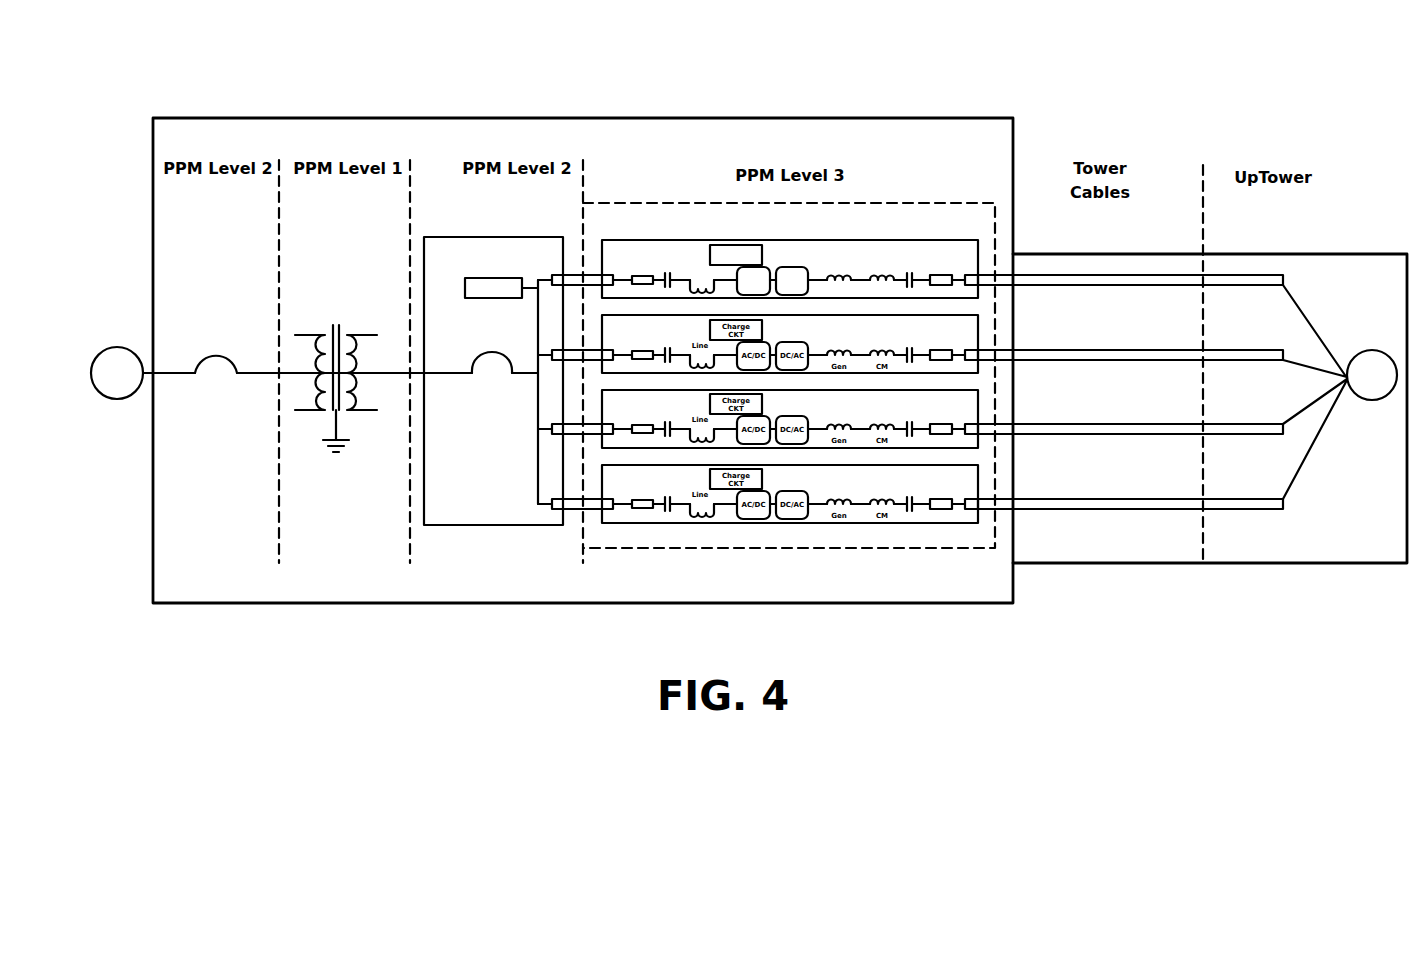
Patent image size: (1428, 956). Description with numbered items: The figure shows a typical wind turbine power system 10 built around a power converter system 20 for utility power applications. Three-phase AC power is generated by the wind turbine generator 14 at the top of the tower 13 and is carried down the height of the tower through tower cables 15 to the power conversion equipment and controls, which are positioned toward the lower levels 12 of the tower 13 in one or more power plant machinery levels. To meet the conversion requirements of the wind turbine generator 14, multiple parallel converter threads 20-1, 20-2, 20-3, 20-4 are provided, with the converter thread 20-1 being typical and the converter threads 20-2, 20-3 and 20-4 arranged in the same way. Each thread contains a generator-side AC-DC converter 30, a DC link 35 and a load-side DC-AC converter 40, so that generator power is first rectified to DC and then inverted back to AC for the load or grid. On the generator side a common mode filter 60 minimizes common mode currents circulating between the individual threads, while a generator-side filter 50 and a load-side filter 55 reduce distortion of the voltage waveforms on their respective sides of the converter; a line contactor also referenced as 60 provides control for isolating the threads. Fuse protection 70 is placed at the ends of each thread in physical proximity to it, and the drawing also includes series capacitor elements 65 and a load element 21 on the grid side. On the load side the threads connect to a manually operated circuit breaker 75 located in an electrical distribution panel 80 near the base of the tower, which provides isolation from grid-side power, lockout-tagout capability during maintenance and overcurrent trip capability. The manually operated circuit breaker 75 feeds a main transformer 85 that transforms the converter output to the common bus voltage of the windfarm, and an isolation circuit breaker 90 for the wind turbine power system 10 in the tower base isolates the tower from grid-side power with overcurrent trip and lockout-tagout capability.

The wind turbine power system 10 is at (775, 638).
The lower levels of the tower 12 is at (425, 118).
The tower 13 is at (1337, 563).
The wind turbine generator 14 is at (1370, 350).
The tower cables 15 is at (1112, 275).
The power converter system 20 is at (878, 203).
The converter thread 20-1 is at (933, 250).
The converter thread 20-2 is at (983, 337).
The converter thread 20-3 is at (983, 412).
The converter thread 20-4 is at (983, 486).
The load / grid 21 is at (110, 347).
The generator-side (AC-DC) converter 30 is at (800, 266).
The DC link 35 is at (773, 268).
The load-side (DC-AC) converter 40 is at (752, 266).
The generator-side filter 50 is at (703, 270).
The load-side filter 55 is at (838, 272).
The common mode filter 60 is at (880, 272).
The capacitor 65 is at (668, 272).
The fuse protection 70 is at (642, 275).
The manually operated circuit breaker 75 is at (483, 367).
The electrical distribution panel 80 is at (465, 237).
The main transformer 85 is at (353, 400).
The isolation circuit breaker 90 is at (213, 367).